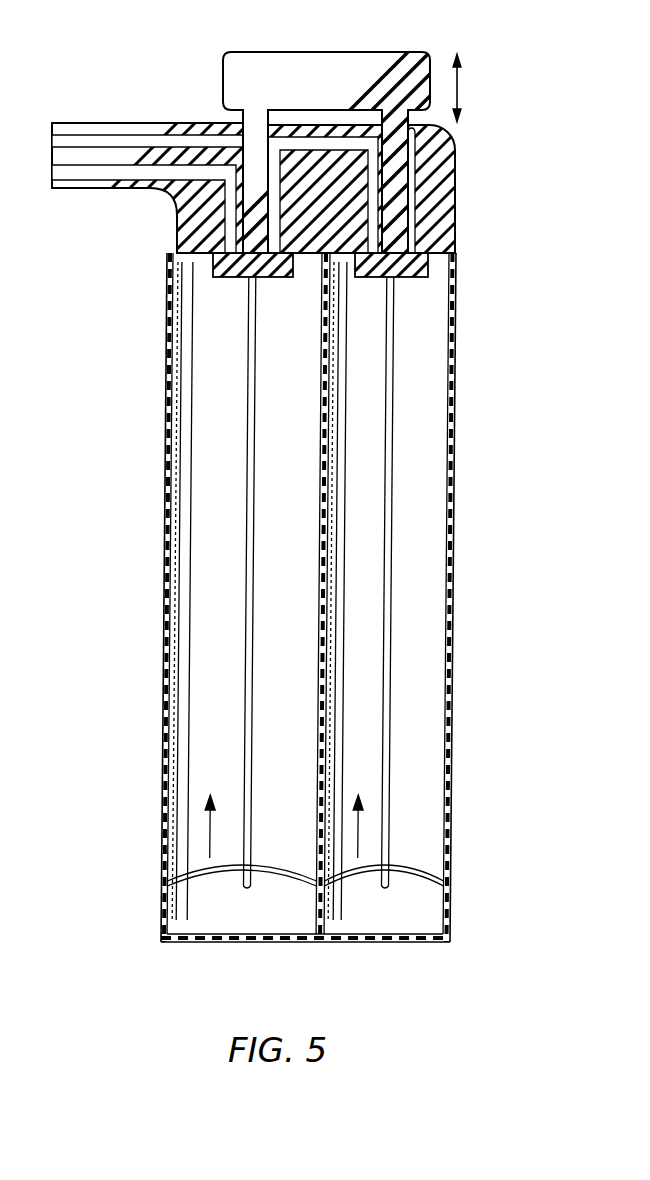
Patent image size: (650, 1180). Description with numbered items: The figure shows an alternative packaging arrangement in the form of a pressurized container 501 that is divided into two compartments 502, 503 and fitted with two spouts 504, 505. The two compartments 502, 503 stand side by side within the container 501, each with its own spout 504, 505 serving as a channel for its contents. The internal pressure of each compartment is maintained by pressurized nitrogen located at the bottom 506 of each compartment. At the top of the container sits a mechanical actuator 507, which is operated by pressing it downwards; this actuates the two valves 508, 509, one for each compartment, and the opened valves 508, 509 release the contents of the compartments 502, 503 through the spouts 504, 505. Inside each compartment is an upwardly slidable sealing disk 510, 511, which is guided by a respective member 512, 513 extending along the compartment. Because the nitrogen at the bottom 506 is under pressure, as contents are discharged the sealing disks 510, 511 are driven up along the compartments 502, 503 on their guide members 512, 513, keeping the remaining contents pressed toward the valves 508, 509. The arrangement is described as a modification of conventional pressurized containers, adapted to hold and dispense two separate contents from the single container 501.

The pressurized container 501 is at (469, 886).
The compartment 502 is at (185, 580).
The compartment 503 is at (430, 550).
The spout 504 is at (105, 172).
The spout 505 is at (133, 141).
The bottom 506 is at (257, 912).
The mechanical actuator 507 is at (421, 14).
The valve 508 is at (268, 278).
The valve 509 is at (418, 278).
The upwardly slidable sealing disk 510 is at (268, 862).
The upwardly slidable sealing disk 511 is at (405, 866).
The guide member 512 is at (249, 652).
The guide member 513 is at (387, 645).